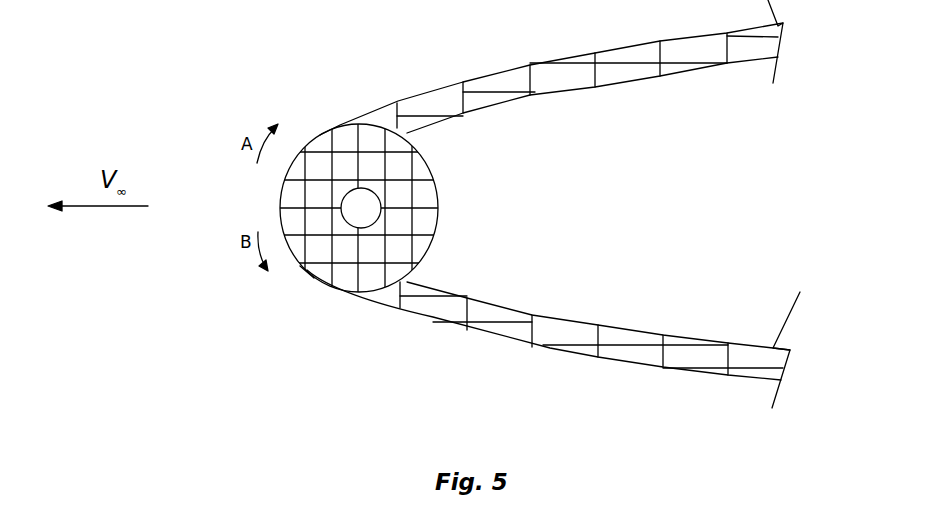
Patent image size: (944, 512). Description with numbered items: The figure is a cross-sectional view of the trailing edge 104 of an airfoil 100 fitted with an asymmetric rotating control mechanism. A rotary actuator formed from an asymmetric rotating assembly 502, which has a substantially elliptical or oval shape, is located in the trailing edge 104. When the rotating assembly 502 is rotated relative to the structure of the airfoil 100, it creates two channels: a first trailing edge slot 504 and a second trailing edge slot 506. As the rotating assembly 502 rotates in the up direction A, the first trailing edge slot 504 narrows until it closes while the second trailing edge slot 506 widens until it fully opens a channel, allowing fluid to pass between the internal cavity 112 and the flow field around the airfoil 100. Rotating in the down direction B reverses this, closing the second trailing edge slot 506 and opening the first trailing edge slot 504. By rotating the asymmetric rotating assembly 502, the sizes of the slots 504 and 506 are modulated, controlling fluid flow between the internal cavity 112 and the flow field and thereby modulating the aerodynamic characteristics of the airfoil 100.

The airfoil 100 is at (553, 204).
The trailing edge 104 is at (279, 208).
The internal cavity 112 is at (681, 203).
The asymmetric rotating assembly 502 is at (307, 272).
The first trailing edge slot 504 is at (407, 133).
The second trailing edge slot 506 is at (407, 282).